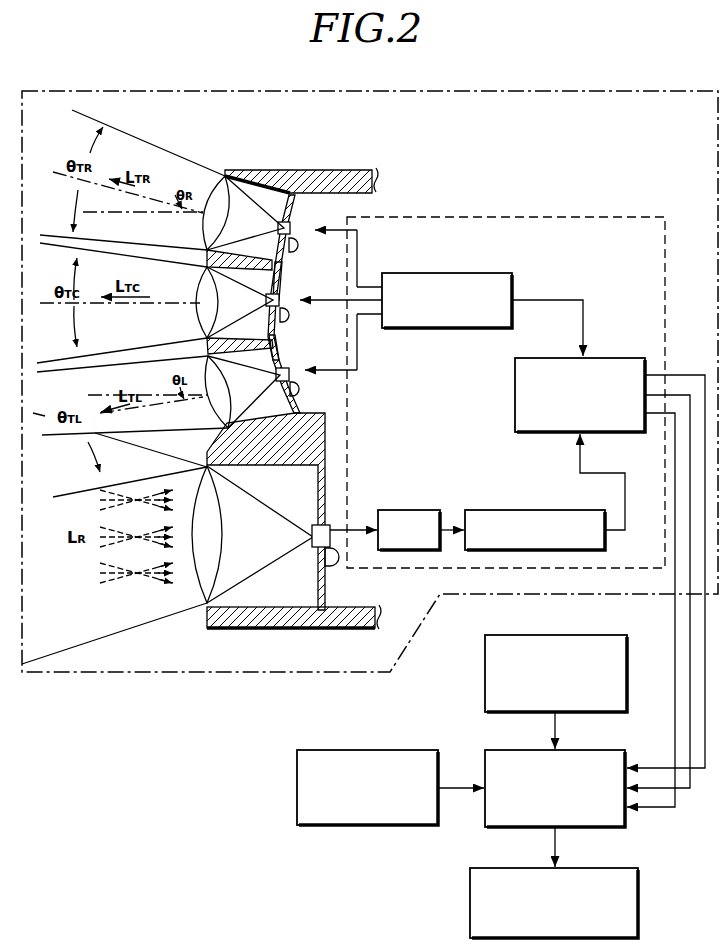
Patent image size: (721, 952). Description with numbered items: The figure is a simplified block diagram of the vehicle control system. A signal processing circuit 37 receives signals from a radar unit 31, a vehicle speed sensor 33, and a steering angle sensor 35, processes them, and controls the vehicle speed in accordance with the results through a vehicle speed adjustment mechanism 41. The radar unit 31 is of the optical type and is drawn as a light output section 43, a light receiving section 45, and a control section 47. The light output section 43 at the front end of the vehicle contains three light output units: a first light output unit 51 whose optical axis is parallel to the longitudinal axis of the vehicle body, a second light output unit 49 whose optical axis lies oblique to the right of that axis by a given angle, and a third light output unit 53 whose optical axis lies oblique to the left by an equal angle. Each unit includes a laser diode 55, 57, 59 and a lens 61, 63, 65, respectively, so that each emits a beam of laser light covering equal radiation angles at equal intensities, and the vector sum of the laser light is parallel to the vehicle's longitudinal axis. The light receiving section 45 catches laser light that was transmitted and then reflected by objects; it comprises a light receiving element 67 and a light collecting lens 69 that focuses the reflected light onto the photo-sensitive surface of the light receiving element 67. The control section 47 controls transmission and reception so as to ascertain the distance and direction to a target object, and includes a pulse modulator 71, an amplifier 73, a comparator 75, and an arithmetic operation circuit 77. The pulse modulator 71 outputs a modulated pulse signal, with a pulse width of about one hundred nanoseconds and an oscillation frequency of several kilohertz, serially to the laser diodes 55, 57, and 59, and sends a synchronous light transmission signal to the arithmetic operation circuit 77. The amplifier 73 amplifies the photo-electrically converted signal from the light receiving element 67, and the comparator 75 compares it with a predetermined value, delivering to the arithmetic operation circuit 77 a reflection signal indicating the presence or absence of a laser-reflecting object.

The radar unit 31 is at (233, 672).
The vehicle speed sensor 33 is at (314, 750).
The steering angle sensor 35 is at (485, 655).
The signal processing circuit 37 is at (495, 750).
The vehicle speed adjustment mechanism 41 is at (470, 880).
The light output section 43 is at (314, 170).
The light receiving section 45 is at (297, 629).
The control section 47 is at (537, 216).
The second light output unit 49 is at (298, 207).
The first light output unit 51 is at (283, 278).
The third light output unit 53 is at (282, 346).
The laser diode 55 is at (294, 233).
The laser diode 57 is at (290, 298).
The laser diode 59 is at (293, 366).
The lens 61 is at (203, 224).
The lens 63 is at (203, 316).
The lens 65 is at (212, 417).
The light receiving element 67 is at (332, 527).
The light collecting lens 69 is at (196, 590).
The pulse modulator 71 is at (491, 272).
The amplifier 73 is at (428, 509).
The comparator 75 is at (490, 509).
The arithmetic operation circuit 77 is at (515, 372).